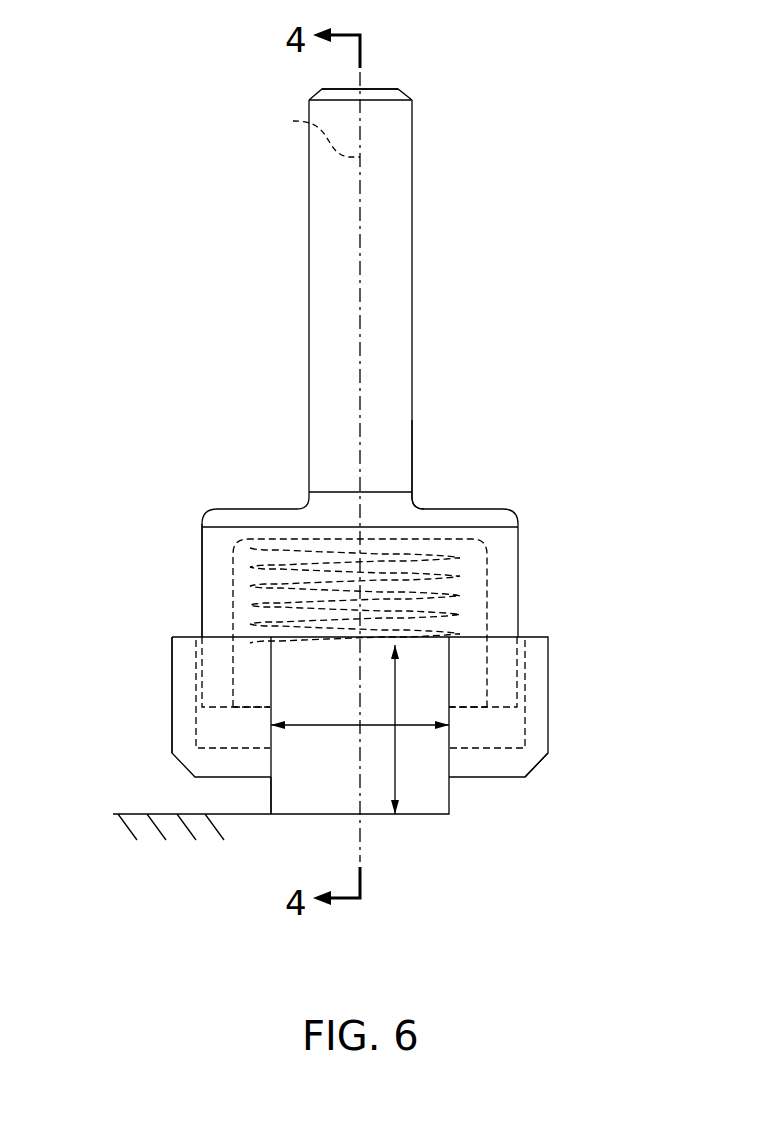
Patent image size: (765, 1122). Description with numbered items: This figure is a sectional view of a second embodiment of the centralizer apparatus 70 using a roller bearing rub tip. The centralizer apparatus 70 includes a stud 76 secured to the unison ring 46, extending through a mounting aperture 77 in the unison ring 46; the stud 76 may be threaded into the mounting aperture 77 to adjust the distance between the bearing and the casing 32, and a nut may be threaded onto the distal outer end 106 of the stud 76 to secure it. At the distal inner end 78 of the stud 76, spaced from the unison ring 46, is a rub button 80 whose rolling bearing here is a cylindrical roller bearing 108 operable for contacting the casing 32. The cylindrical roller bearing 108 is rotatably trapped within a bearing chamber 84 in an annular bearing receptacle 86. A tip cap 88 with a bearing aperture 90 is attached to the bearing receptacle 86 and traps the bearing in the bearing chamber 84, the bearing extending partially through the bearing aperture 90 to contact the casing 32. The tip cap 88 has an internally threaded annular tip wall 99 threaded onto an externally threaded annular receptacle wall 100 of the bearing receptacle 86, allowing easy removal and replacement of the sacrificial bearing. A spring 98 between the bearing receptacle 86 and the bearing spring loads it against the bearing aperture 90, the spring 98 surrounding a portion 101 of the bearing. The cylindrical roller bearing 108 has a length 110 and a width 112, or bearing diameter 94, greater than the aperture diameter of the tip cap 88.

The casing 32 is at (120, 822).
The unison ring 46 is at (400, 293).
The centralizer apparatus 70 is at (145, 882).
The stud 76 is at (412, 460).
The mounting aperture 77 is at (311, 132).
The distal inner end 78 is at (418, 505).
The rub button 80 is at (271, 790).
The bearing chamber 84 is at (518, 620).
The bearing receptacle 86 is at (202, 585).
The tip cap 88 is at (548, 712).
The bearing aperture 90 is at (518, 750).
The bearing diameter 94 is at (522, 721).
The spring 98 is at (487, 580).
The internally threaded annular tip wall 99 is at (172, 713).
The externally threaded annular receptacle wall 100 is at (196, 660).
The portion of the rolling bearing 101 is at (272, 650).
The distal outer end 106 is at (412, 150).
The cylindrical roller bearing 108 is at (449, 805).
The length 110 is at (325, 725).
The width 112 is at (397, 693).